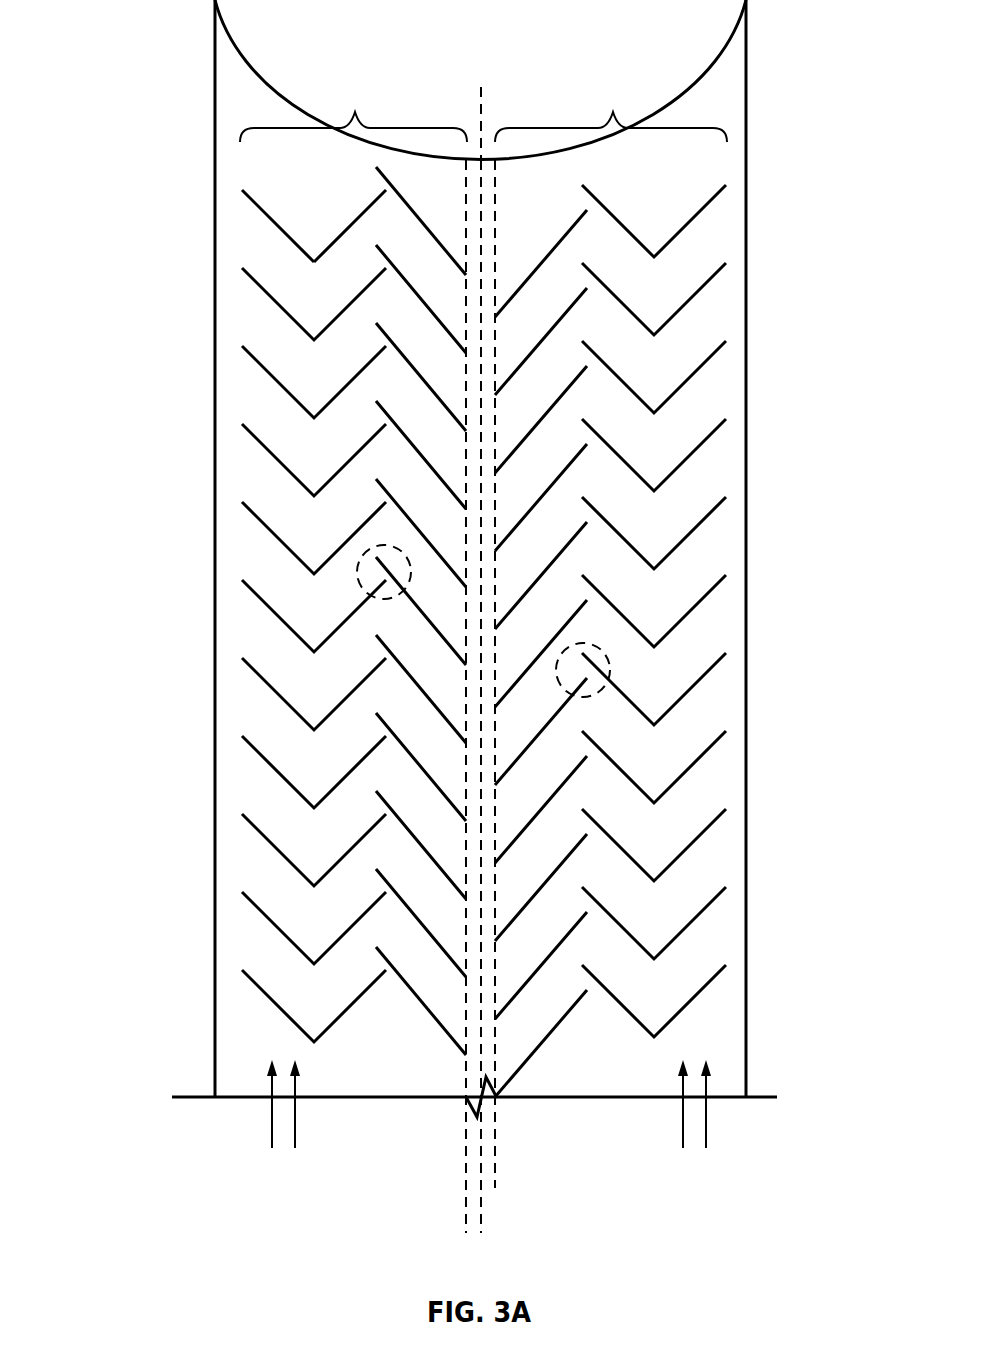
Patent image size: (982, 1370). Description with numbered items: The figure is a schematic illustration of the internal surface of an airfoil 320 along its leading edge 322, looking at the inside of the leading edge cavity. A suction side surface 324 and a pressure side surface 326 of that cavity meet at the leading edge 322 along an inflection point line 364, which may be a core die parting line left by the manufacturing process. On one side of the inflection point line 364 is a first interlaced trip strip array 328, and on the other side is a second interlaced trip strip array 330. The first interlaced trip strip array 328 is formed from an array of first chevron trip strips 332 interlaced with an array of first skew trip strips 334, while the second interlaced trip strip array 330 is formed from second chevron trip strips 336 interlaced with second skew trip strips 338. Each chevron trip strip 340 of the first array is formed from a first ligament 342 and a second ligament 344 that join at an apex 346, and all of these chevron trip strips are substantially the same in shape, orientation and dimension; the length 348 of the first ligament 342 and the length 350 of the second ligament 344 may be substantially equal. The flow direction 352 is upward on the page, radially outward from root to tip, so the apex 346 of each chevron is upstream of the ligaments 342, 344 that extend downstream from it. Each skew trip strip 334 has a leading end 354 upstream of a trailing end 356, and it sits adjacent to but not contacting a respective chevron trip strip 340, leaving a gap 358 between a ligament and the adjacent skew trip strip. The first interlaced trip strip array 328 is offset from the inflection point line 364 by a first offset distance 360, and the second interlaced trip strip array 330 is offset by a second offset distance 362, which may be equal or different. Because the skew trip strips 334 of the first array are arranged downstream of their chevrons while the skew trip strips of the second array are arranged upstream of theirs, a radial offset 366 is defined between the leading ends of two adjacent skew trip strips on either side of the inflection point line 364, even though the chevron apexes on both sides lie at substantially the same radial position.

The airfoil 320 is at (150, 96).
The leading edge 322 is at (466, 116).
The suction side surface 324 is at (240, 158).
The pressure side surface 326 is at (735, 83).
The first interlaced trip strip array 328 is at (353, 110).
The second interlaced trip strip array 330 is at (611, 110).
The first chevron trip strips 332 is at (267, 218).
The first skew trip strips 334 is at (413, 212).
The second chevron trip strips 336 is at (568, 233).
The second skew trip strips 338 is at (702, 210).
The chevron trip strip 340 is at (270, 610).
The first ligament 342 is at (345, 1015).
The second ligament 344 is at (278, 385).
The apex 346 is at (313, 730).
The length of the first ligament 348 is at (314, 1042).
The length of the second ligament 350 is at (314, 418).
The flow direction 352 is at (295, 1103).
The leading end 354 is at (465, 905).
The trailing end 356 is at (376, 636).
The gap 358 is at (357, 563).
The first offset distance 360 is at (492, 1229).
The second offset distance 362 is at (440, 1186).
The inflection point line 364 is at (482, 92).
The radial offset 366 is at (495, 474).